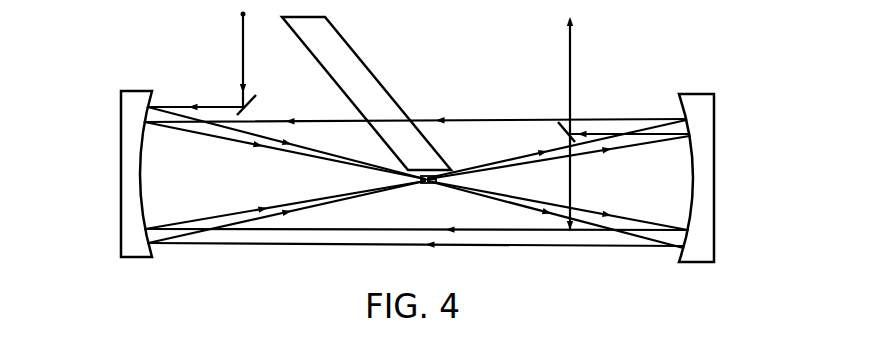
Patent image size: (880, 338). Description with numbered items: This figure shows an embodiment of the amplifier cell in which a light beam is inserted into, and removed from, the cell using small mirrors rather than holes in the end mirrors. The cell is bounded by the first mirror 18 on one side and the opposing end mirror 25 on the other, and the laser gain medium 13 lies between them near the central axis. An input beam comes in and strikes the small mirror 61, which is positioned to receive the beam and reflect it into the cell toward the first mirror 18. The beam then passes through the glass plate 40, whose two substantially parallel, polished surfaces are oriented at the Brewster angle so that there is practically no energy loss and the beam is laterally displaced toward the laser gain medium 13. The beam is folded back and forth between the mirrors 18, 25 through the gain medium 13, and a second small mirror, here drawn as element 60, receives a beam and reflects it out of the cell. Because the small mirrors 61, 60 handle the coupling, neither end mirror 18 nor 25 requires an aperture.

The first mirror 18 is at (128, 109).
The end mirror 25 is at (705, 112).
The glass plate 40 is at (353, 68).
The small mirror 61 is at (252, 100).
The output coupling mirror 60 is at (557, 124).
The laser gain medium 13 is at (428, 185).